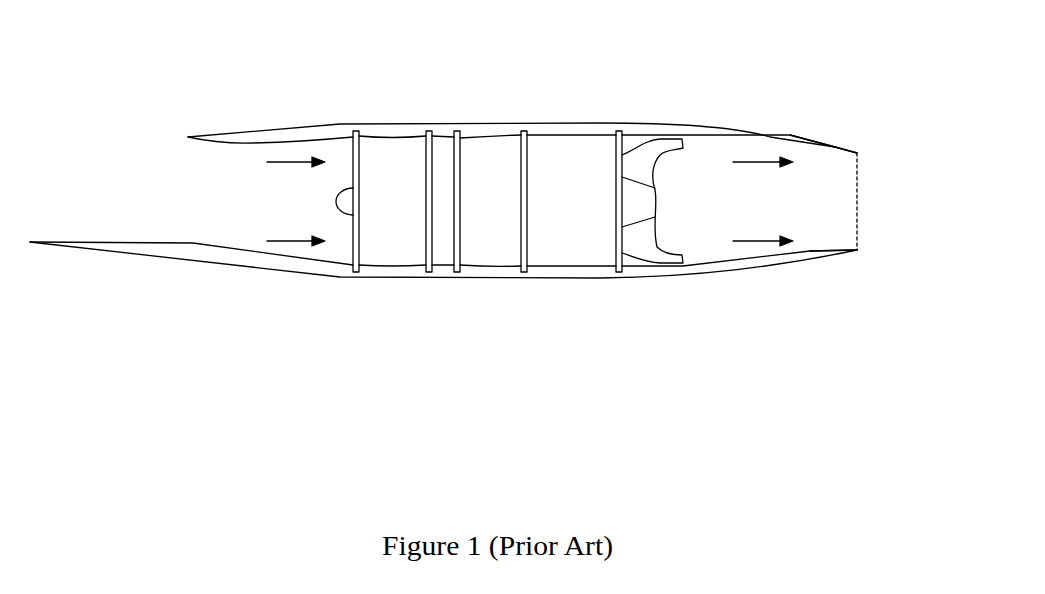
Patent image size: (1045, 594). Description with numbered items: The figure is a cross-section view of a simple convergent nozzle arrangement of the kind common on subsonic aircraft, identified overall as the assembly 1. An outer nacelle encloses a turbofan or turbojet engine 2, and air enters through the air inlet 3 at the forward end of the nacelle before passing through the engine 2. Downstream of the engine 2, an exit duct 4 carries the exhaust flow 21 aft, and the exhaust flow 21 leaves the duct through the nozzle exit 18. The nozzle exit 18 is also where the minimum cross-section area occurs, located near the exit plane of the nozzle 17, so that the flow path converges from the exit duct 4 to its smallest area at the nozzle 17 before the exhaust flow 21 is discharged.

The gas turbine engine 1 is at (585, 123).
The turbofan or turbojet engine 2 is at (390, 165).
The air inlet 3 is at (188, 187).
The exit duct 4 is at (770, 137).
The nozzle 17 is at (835, 142).
The nozzle exit 18 is at (858, 203).
The exhaust flow 21 is at (745, 243).